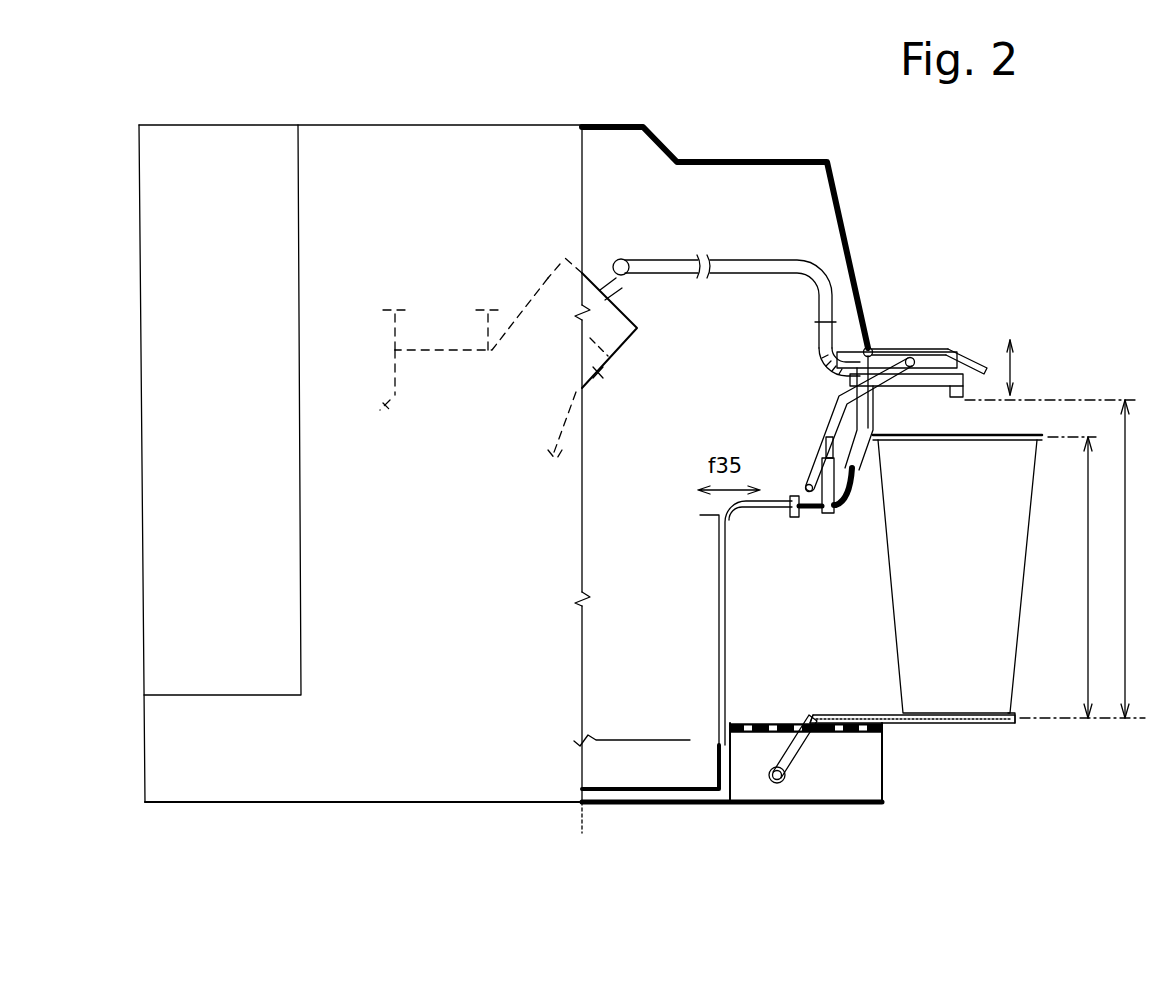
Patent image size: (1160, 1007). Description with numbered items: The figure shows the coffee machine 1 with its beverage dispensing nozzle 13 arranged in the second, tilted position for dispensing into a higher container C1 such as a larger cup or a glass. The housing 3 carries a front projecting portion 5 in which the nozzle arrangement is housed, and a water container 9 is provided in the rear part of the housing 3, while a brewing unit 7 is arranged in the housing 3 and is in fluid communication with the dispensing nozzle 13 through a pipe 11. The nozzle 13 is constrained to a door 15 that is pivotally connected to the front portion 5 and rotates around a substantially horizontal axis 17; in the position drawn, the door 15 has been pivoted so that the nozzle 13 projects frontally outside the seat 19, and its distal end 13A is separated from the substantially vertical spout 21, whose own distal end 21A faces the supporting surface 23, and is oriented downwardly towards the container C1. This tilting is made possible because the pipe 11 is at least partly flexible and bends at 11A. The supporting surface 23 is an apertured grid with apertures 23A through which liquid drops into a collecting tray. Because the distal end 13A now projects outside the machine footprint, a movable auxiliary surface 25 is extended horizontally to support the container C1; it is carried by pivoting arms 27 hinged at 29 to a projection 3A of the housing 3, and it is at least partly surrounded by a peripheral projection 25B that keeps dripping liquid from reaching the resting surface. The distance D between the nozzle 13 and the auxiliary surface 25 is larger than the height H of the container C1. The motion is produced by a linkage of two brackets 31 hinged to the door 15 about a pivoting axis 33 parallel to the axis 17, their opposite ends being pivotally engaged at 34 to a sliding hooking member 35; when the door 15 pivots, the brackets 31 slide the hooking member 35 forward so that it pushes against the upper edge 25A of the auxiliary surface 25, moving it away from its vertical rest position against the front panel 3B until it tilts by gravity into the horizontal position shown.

The coffee machine 1 is at (697, 114).
The housing 3 is at (600, 132).
The projection 3A is at (748, 783).
The front panel 3B is at (730, 640).
The front projecting portion 5 is at (842, 222).
The brewing unit 7 is at (598, 366).
The water container 9 is at (236, 140).
The pipe 11 is at (663, 258).
The bend 11A is at (817, 372).
The beverage dispensing nozzle 13 is at (944, 383).
The distal end 13A is at (955, 397).
The door 15 is at (968, 352).
The horizontal axis 17 is at (876, 348).
The seat 19 is at (860, 416).
The spout 21 is at (843, 495).
The distal end of spout 21A is at (826, 515).
The supporting surface 23 is at (742, 724).
The apertures 23A is at (808, 718).
The movable auxiliary surface 25 is at (960, 715).
The upper edge 25A is at (1030, 723).
The peripheral projection 25B is at (865, 715).
The pivoting arms 27 is at (798, 752).
The hinge 29 is at (777, 786).
The brackets 31 is at (834, 428).
The pivoting axis 33 is at (914, 358).
The pivotal engagement 34 is at (806, 511).
The sliding hooking member 35 is at (800, 490).
The container C1 is at (1016, 574).
The distance D is at (1050, 559).
The height H is at (1072, 577).